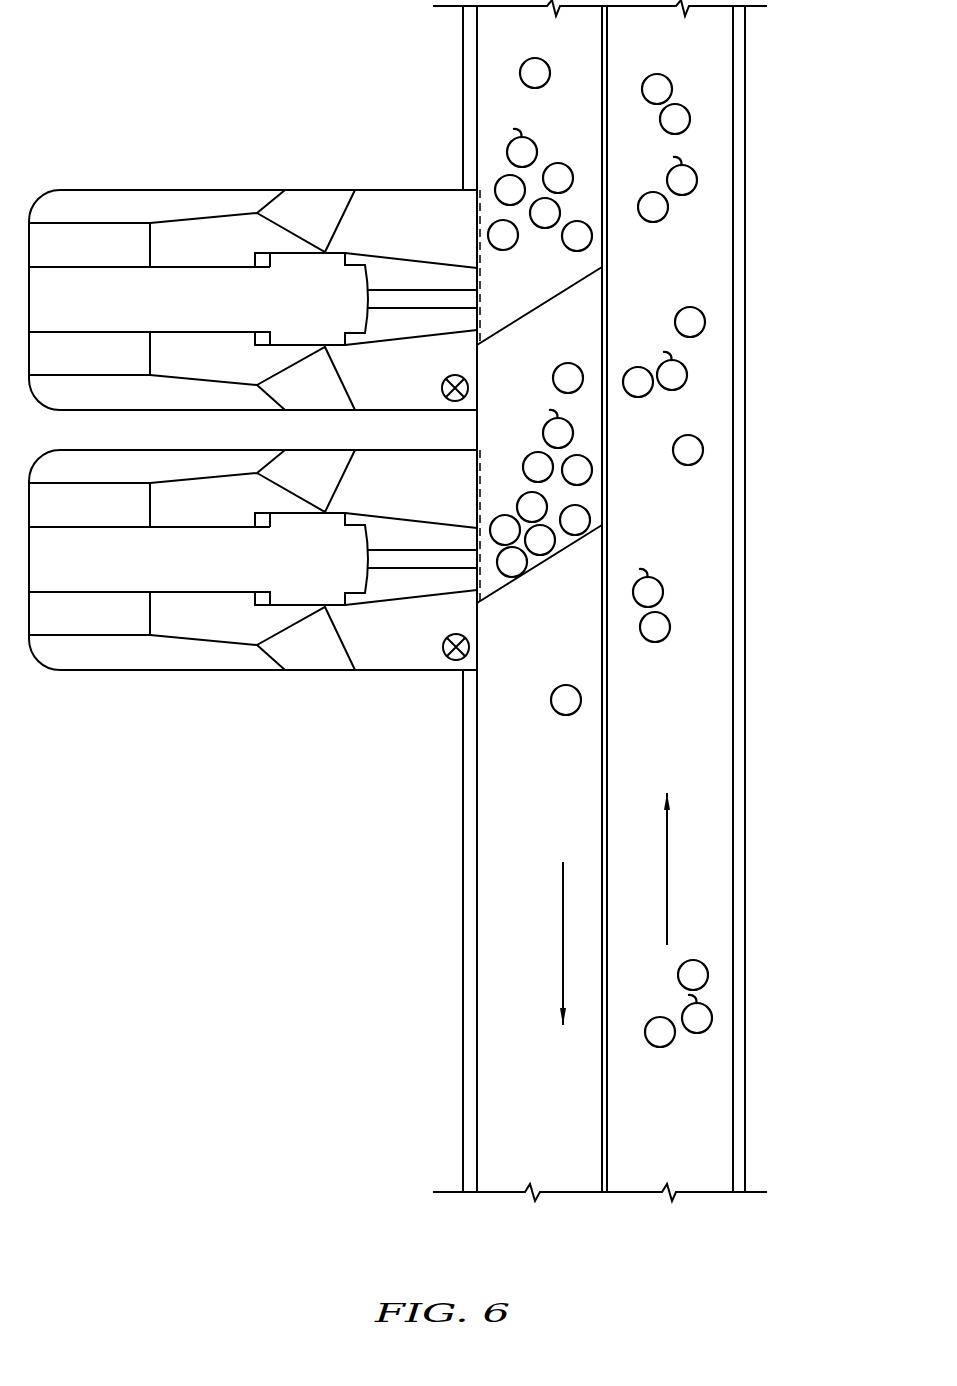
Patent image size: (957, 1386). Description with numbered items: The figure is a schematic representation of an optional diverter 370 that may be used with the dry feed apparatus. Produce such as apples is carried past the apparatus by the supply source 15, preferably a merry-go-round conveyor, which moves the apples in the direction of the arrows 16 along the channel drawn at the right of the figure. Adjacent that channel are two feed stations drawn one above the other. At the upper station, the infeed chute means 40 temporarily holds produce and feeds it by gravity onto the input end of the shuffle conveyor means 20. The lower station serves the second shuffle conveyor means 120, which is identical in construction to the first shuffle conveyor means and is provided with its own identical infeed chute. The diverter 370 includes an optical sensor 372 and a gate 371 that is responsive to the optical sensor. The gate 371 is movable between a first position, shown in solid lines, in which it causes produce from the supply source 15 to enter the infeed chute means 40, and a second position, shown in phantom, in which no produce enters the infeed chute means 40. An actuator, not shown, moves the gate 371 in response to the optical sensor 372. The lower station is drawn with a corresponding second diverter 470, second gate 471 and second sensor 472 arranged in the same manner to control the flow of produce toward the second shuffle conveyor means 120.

The supply source of produce 15 is at (568, 733).
The arrows indicating direction of produce movement 16 is at (667, 872).
The shuffle conveyor means 20 is at (302, 282).
The infeed chute means 40 is at (390, 217).
The second shuffle conveyor means 120 is at (328, 570).
The diverter 370 is at (617, 265).
The gate 371 is at (530, 292).
The optical sensor 372 is at (463, 378).
The second opening in partition wall 470 is at (622, 525).
The second deflector flap 471 is at (535, 560).
The second deflector pivot 472 is at (451, 659).